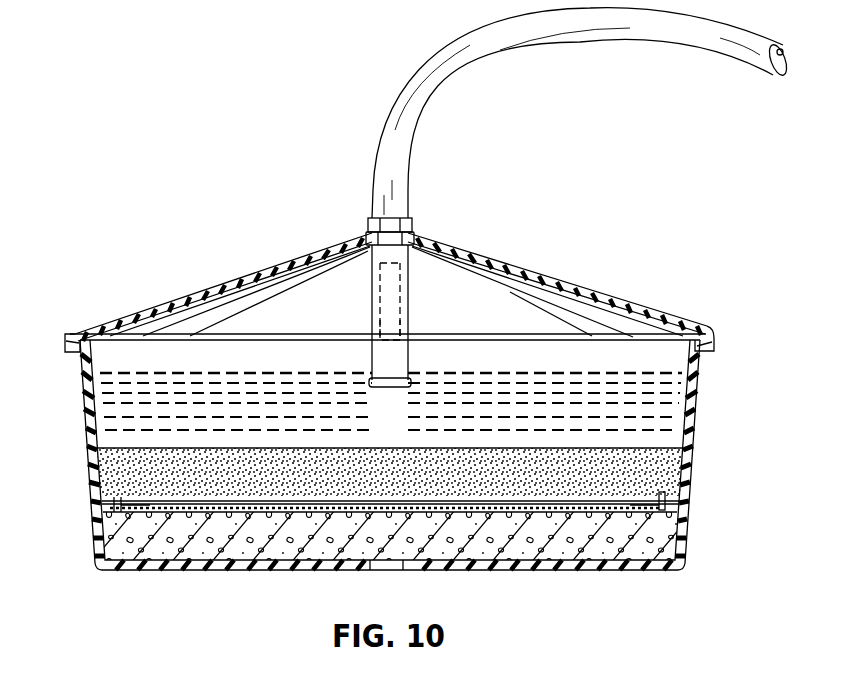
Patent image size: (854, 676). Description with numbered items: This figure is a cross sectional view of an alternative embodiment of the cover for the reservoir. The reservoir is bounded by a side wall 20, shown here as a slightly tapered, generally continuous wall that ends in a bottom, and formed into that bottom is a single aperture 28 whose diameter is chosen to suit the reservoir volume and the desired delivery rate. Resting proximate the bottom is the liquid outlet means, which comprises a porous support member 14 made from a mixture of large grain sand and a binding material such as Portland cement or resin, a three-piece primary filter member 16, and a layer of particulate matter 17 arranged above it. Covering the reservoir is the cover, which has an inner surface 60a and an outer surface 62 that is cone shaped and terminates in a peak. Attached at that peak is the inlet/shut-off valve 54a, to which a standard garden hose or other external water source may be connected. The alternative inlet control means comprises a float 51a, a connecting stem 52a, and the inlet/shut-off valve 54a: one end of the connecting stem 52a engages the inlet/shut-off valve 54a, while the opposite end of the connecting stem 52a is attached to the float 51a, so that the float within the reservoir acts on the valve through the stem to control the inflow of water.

The porous support member 14 is at (162, 566).
The primary filter member 16 is at (96, 498).
The layer of particulate matter 17 is at (668, 468).
The side wall 20 is at (82, 398).
The aperture 28 is at (388, 568).
The float 51a is at (372, 356).
The connecting stem 52a is at (382, 305).
The inlet/shut-off valve 54a is at (410, 272).
The inner surface 60a is at (268, 268).
The rim of lid 62 is at (155, 306).